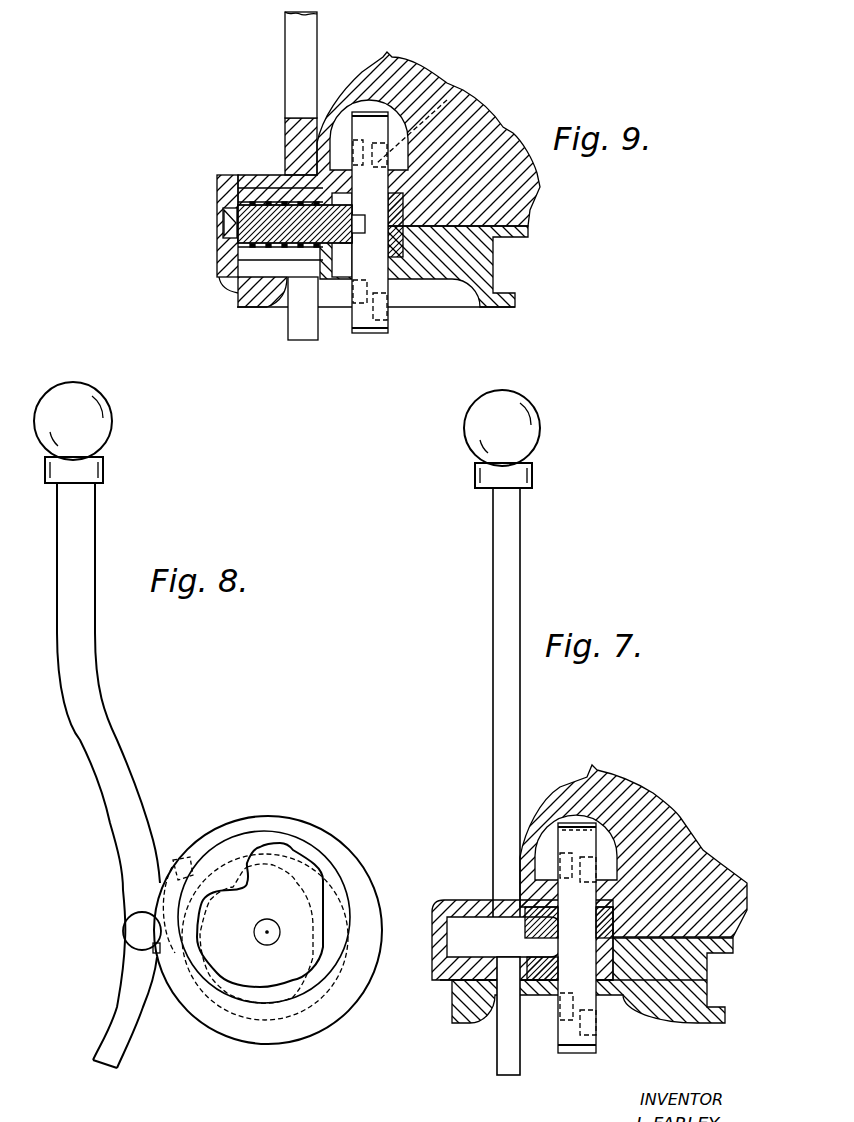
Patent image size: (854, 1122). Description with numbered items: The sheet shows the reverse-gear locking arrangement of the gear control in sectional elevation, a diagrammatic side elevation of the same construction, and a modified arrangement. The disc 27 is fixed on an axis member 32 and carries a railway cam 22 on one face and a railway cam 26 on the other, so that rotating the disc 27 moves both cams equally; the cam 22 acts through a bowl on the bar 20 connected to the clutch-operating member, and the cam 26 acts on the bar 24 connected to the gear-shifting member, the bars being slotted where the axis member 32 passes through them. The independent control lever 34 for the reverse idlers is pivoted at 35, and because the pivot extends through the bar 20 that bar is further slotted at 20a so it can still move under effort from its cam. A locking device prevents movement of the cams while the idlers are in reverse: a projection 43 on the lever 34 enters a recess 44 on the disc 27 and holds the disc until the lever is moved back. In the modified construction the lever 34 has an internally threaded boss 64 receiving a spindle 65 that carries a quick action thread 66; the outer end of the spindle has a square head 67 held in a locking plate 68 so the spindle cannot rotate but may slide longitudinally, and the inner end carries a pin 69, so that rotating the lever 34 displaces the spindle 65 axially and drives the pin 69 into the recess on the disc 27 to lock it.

In FIG. 7, the bar 20 is at (547, 907).
In FIG. 9, the slot 20a is at (343, 243).
In FIG. 7, the slot 20a is at (553, 963).
In FIG. 9, the cam 22 is at (352, 137).
In FIG. 8, the cam 22 is at (193, 997).
In FIG. 7, the cam 22 is at (550, 865).
In FIG. 7, the bar 24 is at (627, 990).
In FIG. 9, the cam 26 is at (457, 100).
In FIG. 8, the cam 26 is at (330, 857).
In FIG. 7, the cam 26 is at (633, 851).
In FIG. 9, the disc 27 is at (389, 328).
In FIG. 8, the disc 27 is at (265, 820).
In FIG. 7, the disc 27 is at (577, 827).
In FIG. 8, the axis member 32 is at (265, 937).
In FIG. 9, the lever 34 is at (292, 85).
In FIG. 8, the lever 34 is at (80, 638).
In FIG. 7, the lever 34 is at (505, 574).
In FIG. 8, the pivot 35 is at (148, 930).
In FIG. 7, the pivot 35 is at (492, 927).
In FIG. 9, the projection 43 is at (360, 225).
In FIG. 8, the projection 43 is at (157, 948).
In FIG. 8, the recess 44 is at (173, 867).
In FIG. 7, the recess 44 is at (577, 830).
In FIG. 9, the boss 64 is at (268, 173).
In FIG. 9, the spindle 65 is at (253, 230).
In FIG. 9, the quick action thread 66 is at (232, 270).
In FIG. 9, the square head 67 is at (223, 213).
In FIG. 9, the locking plate 68 is at (219, 177).
In FIG. 9, the pin 69 is at (271, 307).